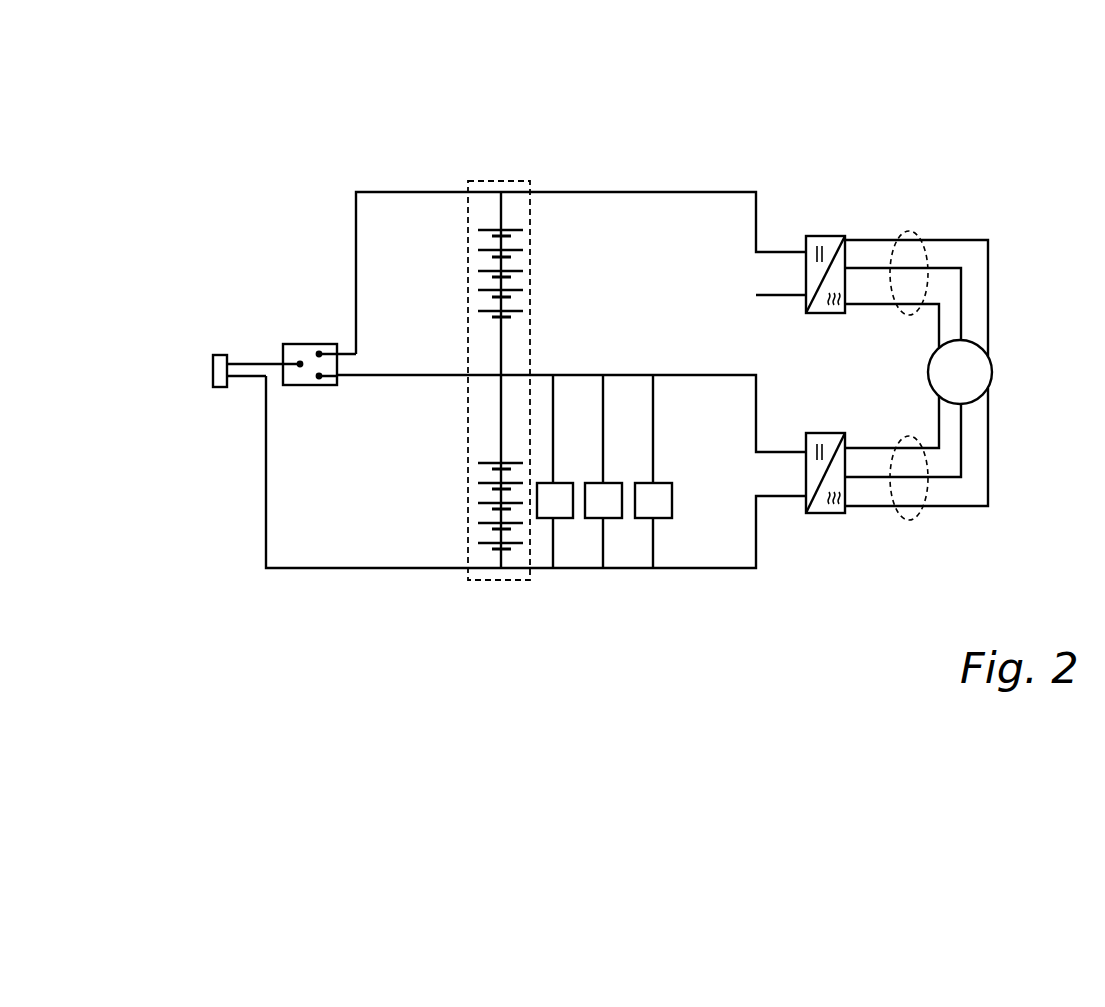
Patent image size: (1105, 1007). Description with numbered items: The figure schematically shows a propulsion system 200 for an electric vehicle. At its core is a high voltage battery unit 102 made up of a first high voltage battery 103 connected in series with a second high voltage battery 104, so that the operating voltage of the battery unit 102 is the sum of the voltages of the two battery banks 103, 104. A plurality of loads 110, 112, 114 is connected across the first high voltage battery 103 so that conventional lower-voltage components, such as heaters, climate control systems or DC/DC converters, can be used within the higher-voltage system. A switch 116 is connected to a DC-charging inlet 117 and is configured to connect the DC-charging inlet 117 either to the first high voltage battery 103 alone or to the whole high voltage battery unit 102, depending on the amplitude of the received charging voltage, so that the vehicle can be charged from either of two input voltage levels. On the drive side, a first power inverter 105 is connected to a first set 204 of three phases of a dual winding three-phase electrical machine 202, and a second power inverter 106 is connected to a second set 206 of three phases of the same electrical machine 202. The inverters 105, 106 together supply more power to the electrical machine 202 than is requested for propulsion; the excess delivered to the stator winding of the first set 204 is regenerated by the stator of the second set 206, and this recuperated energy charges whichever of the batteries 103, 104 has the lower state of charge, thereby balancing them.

The propulsion system 200 is at (880, 117).
The high voltage battery unit 102 is at (512, 181).
The first high voltage battery 103 is at (494, 508).
The second high voltage battery 104 is at (503, 276).
The first power inverter 105 is at (816, 236).
The second power inverter 106 is at (812, 513).
The load 110 is at (560, 483).
The load 112 is at (612, 483).
The load 114 is at (661, 483).
The switch 116 is at (303, 344).
The DC-charging inlet 117 is at (213, 367).
The dual winding three-phase electrical machine 202 is at (993, 371).
The first set of three phases 204 is at (909, 231).
The second set of three phases 206 is at (910, 520).